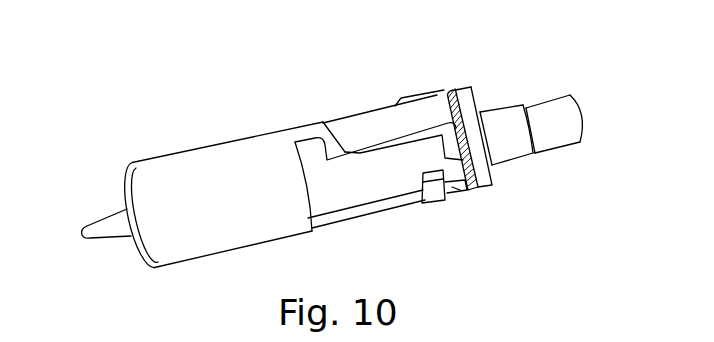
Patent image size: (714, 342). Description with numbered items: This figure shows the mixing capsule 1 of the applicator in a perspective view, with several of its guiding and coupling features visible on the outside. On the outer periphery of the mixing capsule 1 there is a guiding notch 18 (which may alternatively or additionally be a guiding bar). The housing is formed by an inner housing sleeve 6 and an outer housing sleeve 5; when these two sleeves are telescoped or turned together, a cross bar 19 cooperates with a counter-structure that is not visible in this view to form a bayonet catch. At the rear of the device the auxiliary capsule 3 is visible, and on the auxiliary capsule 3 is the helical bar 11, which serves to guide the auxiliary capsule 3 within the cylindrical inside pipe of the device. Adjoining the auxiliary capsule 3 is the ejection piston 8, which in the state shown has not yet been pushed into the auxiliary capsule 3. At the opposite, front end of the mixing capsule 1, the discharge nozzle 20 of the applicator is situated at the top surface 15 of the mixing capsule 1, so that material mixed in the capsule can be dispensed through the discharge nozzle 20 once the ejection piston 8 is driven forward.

The mixing capsule 1 is at (112, 89).
The auxiliary capsule 3 is at (500, 103).
The outer housing sleeve 5 is at (223, 138).
The inner housing sleeve 6 is at (357, 121).
The ejection piston 8 is at (562, 141).
The helical bar 11 is at (507, 152).
The top surface 15 is at (125, 196).
The guiding notch 18 is at (352, 162).
The cross bar 19 is at (448, 198).
The discharge nozzle 20 is at (100, 212).